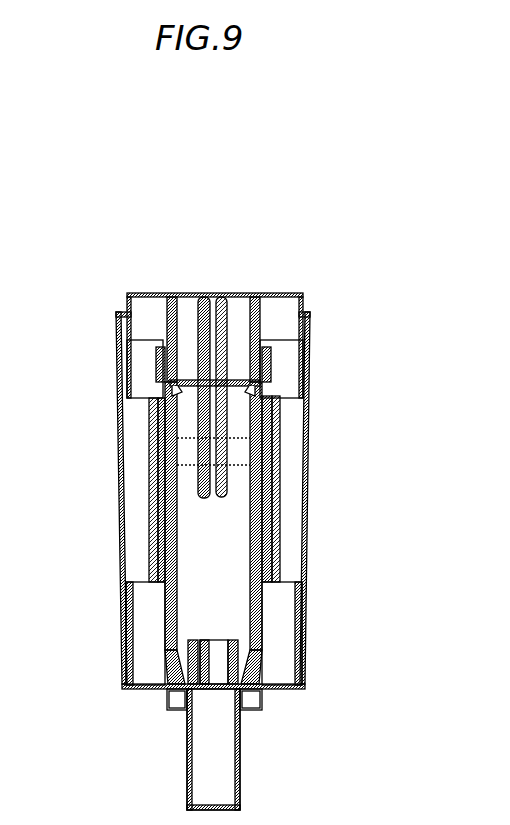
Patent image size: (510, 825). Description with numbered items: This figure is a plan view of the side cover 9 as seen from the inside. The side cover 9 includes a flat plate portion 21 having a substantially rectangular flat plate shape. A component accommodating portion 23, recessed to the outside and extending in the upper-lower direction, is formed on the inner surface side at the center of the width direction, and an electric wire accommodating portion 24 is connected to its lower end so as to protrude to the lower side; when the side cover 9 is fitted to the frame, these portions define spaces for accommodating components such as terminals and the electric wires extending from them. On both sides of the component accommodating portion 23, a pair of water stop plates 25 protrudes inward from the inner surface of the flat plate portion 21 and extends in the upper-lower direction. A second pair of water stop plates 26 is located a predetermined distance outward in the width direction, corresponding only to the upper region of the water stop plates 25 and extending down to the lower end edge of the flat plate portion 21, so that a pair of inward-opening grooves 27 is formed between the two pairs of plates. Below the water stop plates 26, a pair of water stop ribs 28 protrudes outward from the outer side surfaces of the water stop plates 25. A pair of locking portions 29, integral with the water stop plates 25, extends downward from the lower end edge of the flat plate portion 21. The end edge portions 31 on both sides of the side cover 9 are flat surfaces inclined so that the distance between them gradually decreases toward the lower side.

The side cover 9 is at (261, 252).
The flat plate portion 21 is at (297, 428).
The component accommodating portion 23 is at (215, 556).
The electric wire accommodating portion 24 is at (240, 786).
The water stop plates 25 is at (165, 458).
The water stop plates 26 is at (152, 538).
The grooves 27 is at (160, 500).
The water stop ribs 28 is at (160, 602).
The locking portions 29 is at (124, 650).
The end edge portions 31 is at (118, 412).